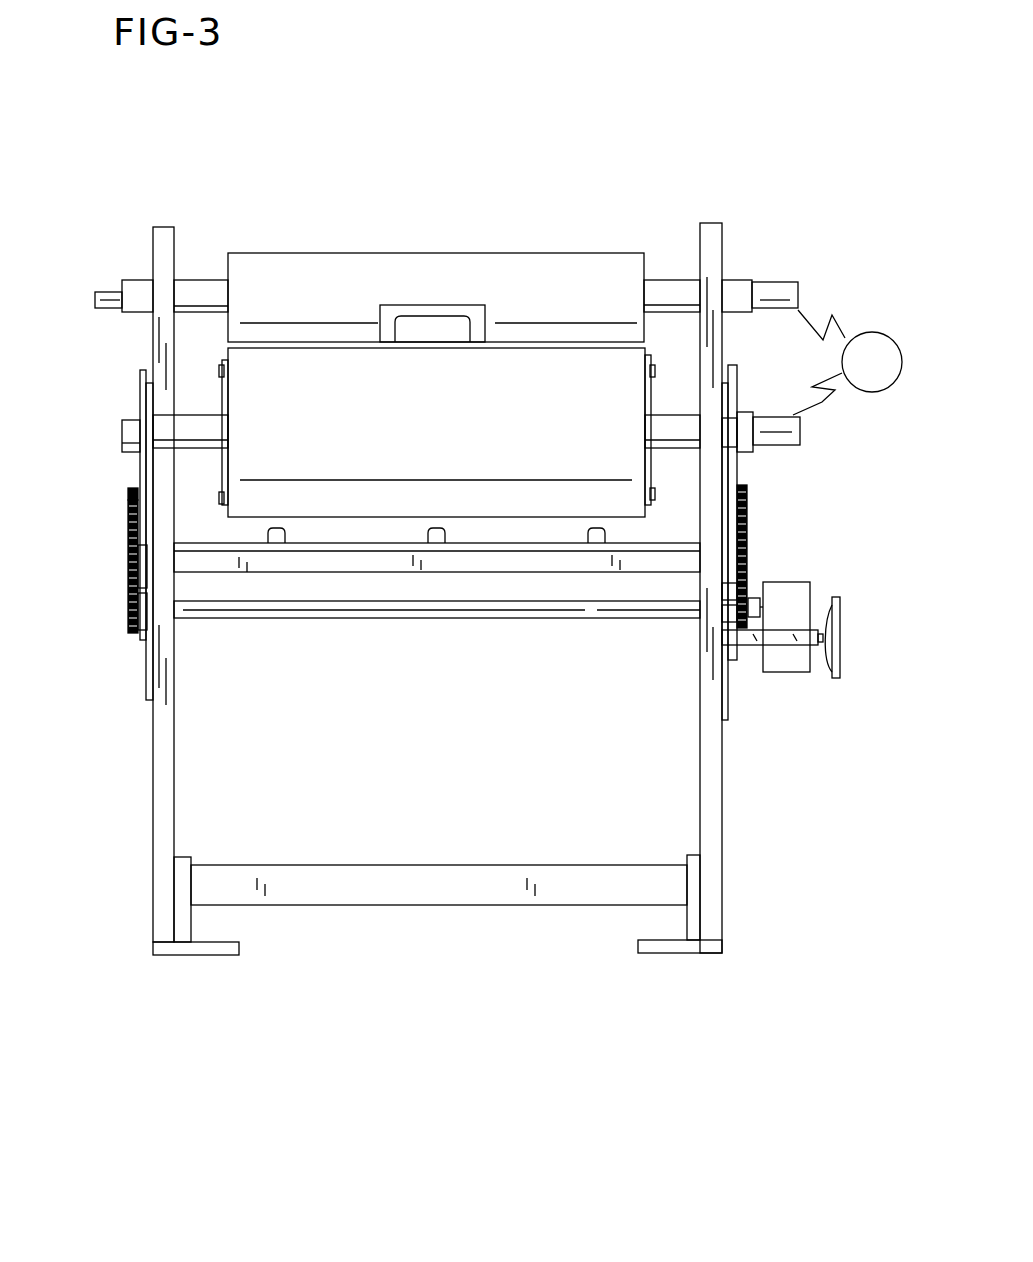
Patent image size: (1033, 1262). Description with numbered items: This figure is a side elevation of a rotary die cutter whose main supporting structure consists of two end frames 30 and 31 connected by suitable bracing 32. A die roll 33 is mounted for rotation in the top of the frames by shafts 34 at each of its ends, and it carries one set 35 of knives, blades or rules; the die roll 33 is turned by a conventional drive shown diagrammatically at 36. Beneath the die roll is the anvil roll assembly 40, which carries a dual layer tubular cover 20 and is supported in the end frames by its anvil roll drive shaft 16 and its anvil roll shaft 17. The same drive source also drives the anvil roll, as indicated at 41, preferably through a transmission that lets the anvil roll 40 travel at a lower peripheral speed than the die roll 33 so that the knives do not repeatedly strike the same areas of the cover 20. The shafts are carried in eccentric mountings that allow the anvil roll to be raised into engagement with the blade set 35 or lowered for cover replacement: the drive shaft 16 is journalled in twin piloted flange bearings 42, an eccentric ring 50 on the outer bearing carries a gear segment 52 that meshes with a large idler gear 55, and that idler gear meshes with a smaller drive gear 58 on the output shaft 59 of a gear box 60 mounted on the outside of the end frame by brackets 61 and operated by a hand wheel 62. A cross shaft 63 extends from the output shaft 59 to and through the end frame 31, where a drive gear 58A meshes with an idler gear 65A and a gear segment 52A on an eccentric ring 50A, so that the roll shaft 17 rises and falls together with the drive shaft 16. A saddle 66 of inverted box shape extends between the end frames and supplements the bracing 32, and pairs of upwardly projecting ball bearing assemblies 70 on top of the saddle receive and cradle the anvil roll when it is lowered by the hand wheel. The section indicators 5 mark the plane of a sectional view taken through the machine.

The section line 5- 5 is at (196, 707).
The anvil roll drive shaft 16 is at (803, 432).
The anvil roll shaft 17 is at (128, 420).
The dual layer tubular cover 20 is at (468, 420).
The end frame 30 is at (722, 817).
The end frame 31 is at (160, 765).
The bracing 32 is at (462, 905).
The die roll 33 is at (450, 267).
The shafts 34 is at (107, 290).
The set of knives 35 is at (430, 316).
The drive 36 is at (865, 332).
The anvil roll assembly 40 is at (662, 342).
The anvil roll drive connection 41 is at (822, 400).
The twin piloted flange bearings 42 is at (698, 455).
The eccentric ring 50 is at (745, 465).
The eccentric ring 50A is at (125, 462).
The gear segment 52 is at (750, 499).
The gear segment 52A is at (128, 500).
The idler gear 55 is at (753, 550).
The drive gear 58 is at (745, 607).
The drive gear 58A is at (128, 607).
The output shaft 59 is at (755, 605).
The gear box 60 is at (797, 672).
The brackets 61 is at (745, 647).
The hand wheel 62 is at (840, 627).
The cross shaft 63 is at (520, 618).
The idler gear 65A is at (128, 568).
The saddle 66 is at (362, 562).
The ball bearing assemblies 70 is at (433, 523).